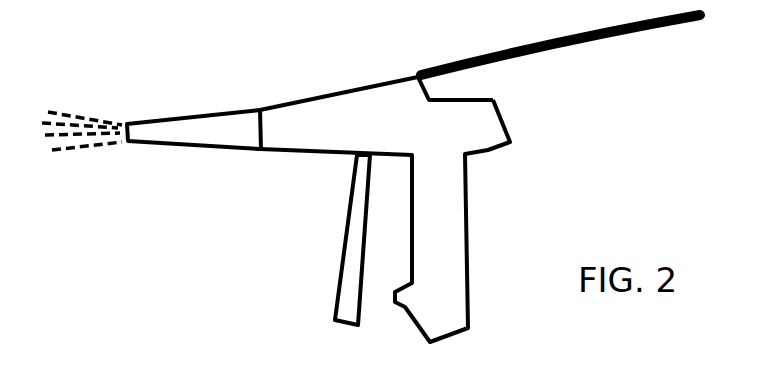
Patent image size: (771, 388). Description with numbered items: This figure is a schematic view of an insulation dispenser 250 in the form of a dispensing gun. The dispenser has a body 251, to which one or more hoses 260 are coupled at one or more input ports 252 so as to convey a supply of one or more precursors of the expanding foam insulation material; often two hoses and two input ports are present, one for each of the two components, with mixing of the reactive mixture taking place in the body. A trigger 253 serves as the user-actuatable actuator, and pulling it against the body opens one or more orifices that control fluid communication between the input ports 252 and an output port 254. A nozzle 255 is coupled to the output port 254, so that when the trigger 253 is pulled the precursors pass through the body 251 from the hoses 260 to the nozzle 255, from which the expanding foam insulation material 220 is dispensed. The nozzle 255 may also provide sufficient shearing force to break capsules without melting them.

The expanding foam insulation material 220 is at (77, 93).
The insulation dispenser 250 is at (249, 218).
The body 251 is at (467, 145).
The input port 252 is at (422, 54).
The trigger 253 is at (350, 272).
The output port 254 is at (265, 96).
The nozzle 255 is at (203, 133).
The hose 260 is at (640, 33).